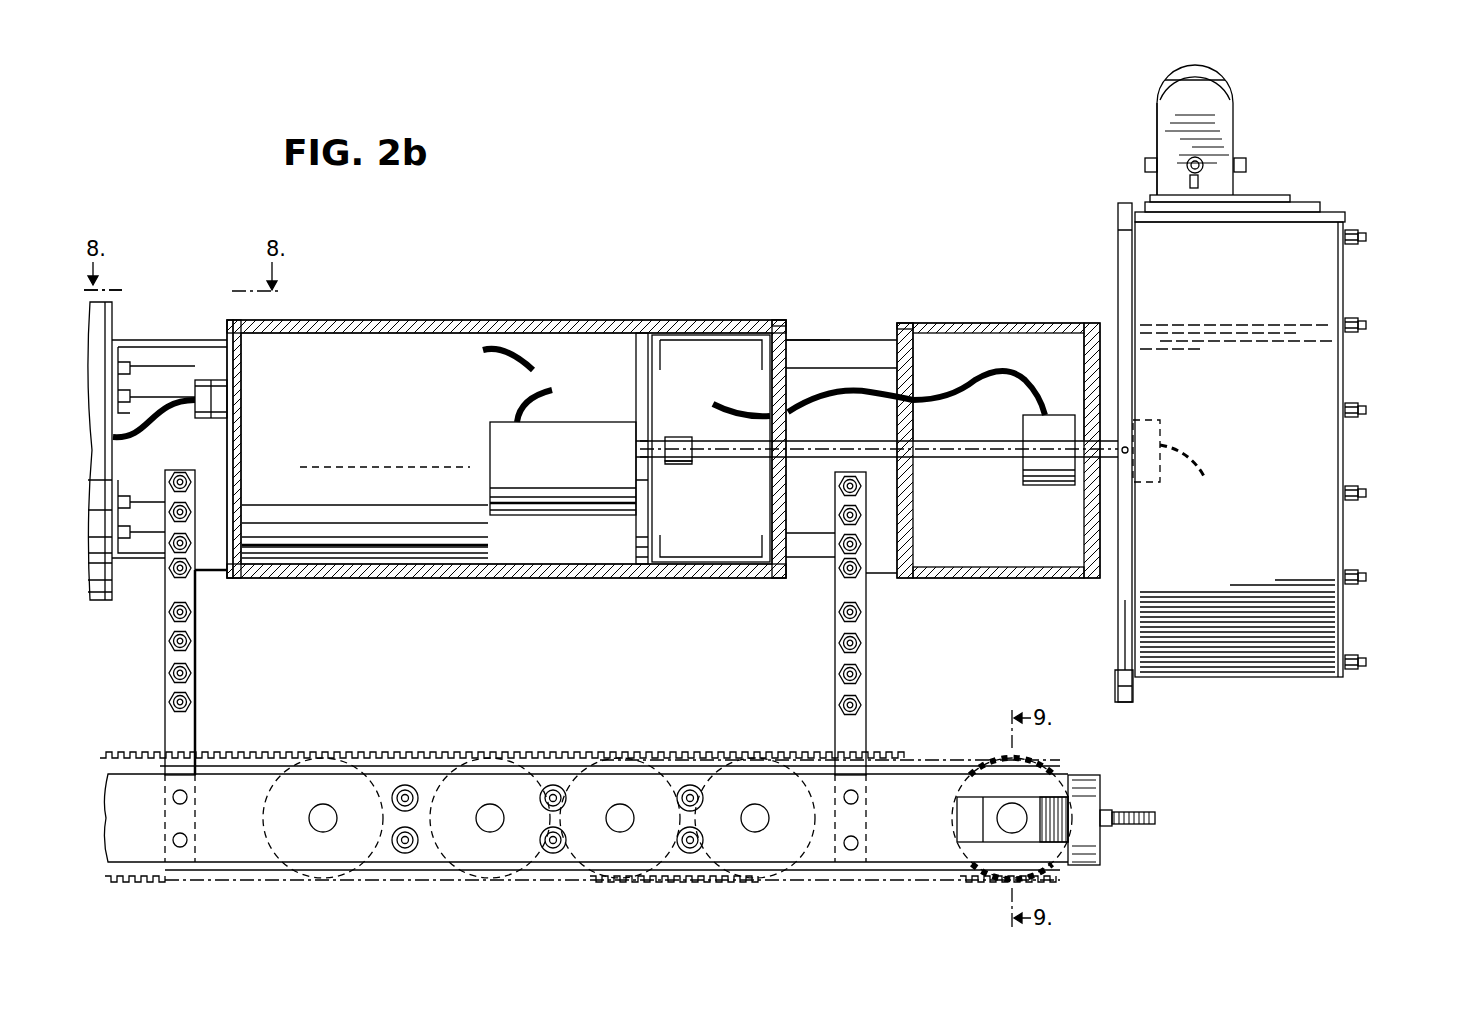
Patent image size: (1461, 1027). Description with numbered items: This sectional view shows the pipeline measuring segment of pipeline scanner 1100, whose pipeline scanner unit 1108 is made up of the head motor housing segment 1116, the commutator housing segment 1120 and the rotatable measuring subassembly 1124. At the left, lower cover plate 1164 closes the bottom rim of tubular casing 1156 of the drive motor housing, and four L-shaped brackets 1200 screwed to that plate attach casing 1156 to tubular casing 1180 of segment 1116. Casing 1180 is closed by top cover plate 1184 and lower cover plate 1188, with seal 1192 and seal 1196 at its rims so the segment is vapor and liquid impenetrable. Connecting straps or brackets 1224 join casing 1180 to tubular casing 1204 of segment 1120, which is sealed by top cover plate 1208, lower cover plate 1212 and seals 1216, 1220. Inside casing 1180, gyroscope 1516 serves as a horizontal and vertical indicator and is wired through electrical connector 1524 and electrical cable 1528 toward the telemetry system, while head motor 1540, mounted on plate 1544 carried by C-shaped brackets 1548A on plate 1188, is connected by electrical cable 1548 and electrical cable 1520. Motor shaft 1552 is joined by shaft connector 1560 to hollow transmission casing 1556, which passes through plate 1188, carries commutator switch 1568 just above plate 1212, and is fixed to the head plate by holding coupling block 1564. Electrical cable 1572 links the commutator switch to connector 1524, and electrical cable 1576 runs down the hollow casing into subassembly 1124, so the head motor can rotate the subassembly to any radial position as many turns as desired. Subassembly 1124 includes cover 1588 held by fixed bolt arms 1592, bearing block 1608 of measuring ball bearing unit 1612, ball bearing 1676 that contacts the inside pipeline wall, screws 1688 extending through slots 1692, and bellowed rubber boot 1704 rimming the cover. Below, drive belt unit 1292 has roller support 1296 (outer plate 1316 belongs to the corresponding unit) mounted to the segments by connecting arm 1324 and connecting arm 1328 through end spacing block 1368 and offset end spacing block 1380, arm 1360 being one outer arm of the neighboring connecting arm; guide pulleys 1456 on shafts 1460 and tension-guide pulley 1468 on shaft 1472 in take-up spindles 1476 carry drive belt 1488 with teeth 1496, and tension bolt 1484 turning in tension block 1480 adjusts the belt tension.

The pipeline scanner 1100 is at (572, 266).
The pipeline scanner unit 1108 is at (1107, 236).
The head motor housing segment 1116 is at (515, 307).
The commutator housing segment 1120 is at (1020, 308).
The rotatable measuring subassembly 1124 is at (1358, 368).
The tubular casing 1156 is at (115, 291).
The lower cover plate 1164 is at (112, 320).
The tubular casing 1180 is at (410, 332).
The top cover plate 1184 is at (226, 338).
The lower cover plate 1188 is at (788, 340).
The seal 1192 is at (240, 330).
The seal 1196 is at (778, 324).
The L-shaped brackets 1200 is at (185, 348).
The tubular casing 1204 is at (962, 325).
The top cover plate 1208 is at (910, 380).
The lower cover plate 1212 is at (1090, 365).
The seal 1216 is at (905, 330).
The seal 1220 is at (1090, 330).
The connecting straps or brackets 1224 is at (830, 360).
The drive belt unit 1292 is at (655, 898).
The roller support 1296 is at (525, 898).
The outer plate 1316 is at (225, 855).
The connecting arm 1324 is at (206, 663).
The connecting arm 1328 is at (876, 680).
The arm 1360 is at (857, 628).
The end spacing block 1368 is at (210, 576).
The offset end spacing block 1380 is at (905, 540).
The guide pulleys 1456 is at (335, 870).
The shafts 1460 is at (320, 812).
The tension-guide pulley 1468 is at (1040, 875).
The shaft 1472 is at (1000, 820).
The take-up spindles 1476 is at (975, 808).
The tension block 1480 is at (1095, 790).
The tension bolt 1484 is at (1140, 815).
The drive belt 1488 is at (605, 790).
The teeth 1496 is at (265, 756).
The gyroscope 1516 is at (312, 365).
The electrical cable 1520 is at (528, 356).
The electrical connector 1524 is at (222, 396).
The electrical cable 1528 is at (140, 430).
The head motor 1540 is at (567, 430).
The head motor plate 1544 is at (645, 338).
The electrical cable 1548 is at (535, 400).
The C-shaped brackets 1548A is at (675, 340).
The motor shaft 1552 is at (672, 437).
The hollow transmission casing 1556 is at (750, 460).
The shaft connector 1560 is at (685, 463).
The holding coupling block 1564 is at (1163, 430).
The commutator switch 1568 is at (1055, 472).
The electrical cable 1572 is at (955, 396).
The electrical cable 1576 is at (1200, 452).
The cover 1588 is at (1258, 660).
The fixed bolt arms 1592 is at (1362, 245).
The bearing block 1608 is at (1222, 100).
The measuring ball bearing unit 1612 is at (1141, 98).
The ball bearing 1676 is at (1200, 75).
The screws 1688 is at (1150, 160).
The slots 1692 is at (1212, 177).
The bellowed rubber boot 1704 is at (1305, 212).